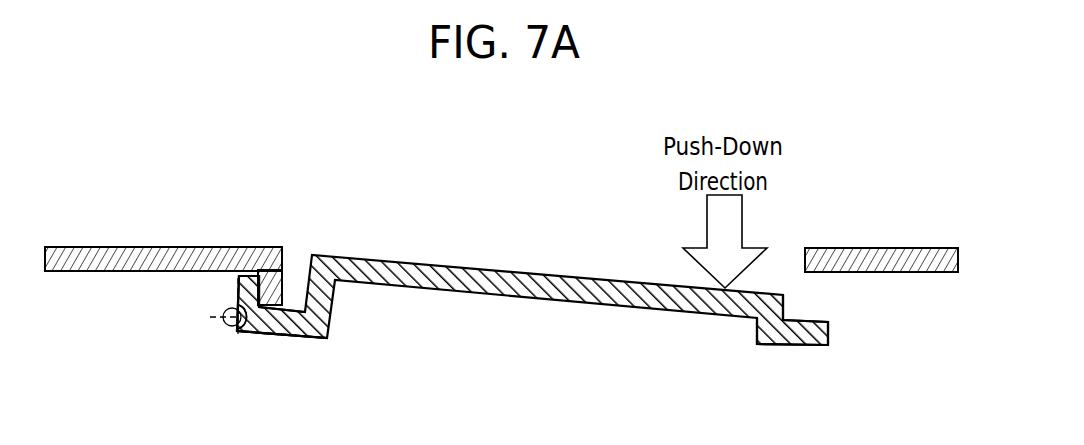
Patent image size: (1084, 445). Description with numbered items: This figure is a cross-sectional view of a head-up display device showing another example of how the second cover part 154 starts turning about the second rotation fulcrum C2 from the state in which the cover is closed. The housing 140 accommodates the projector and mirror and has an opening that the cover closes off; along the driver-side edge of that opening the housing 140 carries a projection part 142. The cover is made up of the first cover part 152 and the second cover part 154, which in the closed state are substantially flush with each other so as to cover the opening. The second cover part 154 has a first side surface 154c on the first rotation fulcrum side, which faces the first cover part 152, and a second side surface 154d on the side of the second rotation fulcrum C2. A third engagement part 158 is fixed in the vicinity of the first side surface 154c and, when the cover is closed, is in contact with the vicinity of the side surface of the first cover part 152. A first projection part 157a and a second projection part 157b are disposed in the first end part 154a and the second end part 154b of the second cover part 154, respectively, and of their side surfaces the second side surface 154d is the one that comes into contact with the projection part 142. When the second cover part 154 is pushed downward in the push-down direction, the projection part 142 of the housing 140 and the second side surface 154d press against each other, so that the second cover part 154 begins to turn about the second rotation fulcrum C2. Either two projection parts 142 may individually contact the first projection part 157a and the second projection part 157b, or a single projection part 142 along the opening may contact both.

The housing 140 is at (147, 247).
The projection part 142 is at (282, 288).
The first cover part 152 is at (888, 247).
The second cover part 154 is at (547, 275).
The first end part 154a is at (278, 335).
The second end part 154b is at (282, 334).
The first side surface 154c is at (785, 308).
The second side surface 154d is at (258, 280).
The first projection part 157a is at (237, 279).
The second projection part 157b is at (242, 317).
The third engagement part 158 is at (787, 345).
The second rotation fulcrum C2 is at (223, 327).